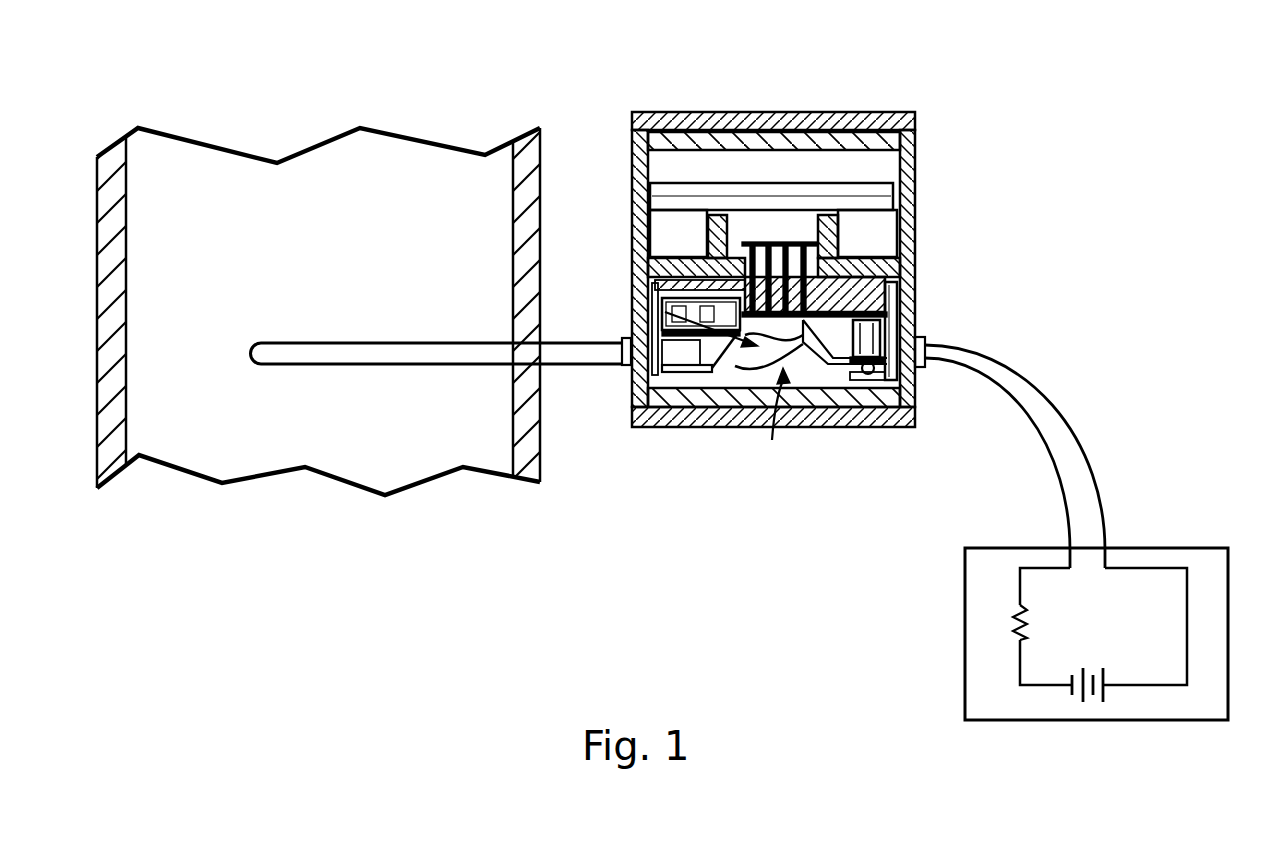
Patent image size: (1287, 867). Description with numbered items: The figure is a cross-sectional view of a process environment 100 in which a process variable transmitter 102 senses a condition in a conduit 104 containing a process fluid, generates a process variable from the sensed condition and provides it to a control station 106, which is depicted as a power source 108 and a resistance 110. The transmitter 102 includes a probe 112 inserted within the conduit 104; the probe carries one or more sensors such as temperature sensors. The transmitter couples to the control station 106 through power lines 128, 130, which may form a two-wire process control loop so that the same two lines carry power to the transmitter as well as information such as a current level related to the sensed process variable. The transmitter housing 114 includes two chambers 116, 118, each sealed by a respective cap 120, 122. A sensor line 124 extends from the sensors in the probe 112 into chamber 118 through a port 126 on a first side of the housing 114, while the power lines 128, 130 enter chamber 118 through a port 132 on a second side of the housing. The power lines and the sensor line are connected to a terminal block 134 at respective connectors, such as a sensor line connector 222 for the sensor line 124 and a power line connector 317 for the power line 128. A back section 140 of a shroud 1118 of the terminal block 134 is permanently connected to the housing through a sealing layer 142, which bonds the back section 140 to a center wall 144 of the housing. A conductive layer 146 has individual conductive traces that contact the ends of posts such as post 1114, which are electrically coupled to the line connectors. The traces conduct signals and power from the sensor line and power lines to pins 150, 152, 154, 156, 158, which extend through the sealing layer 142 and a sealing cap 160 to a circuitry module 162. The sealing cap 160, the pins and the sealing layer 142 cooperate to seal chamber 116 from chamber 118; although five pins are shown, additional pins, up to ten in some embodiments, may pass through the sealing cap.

The process environment 100 is at (603, 582).
The process variable transmitter 102 is at (1050, 164).
The conduit 104 is at (540, 430).
The control station 106 is at (965, 620).
The power source 108 is at (1093, 705).
The resistance 110 is at (1033, 618).
The probe 112 is at (430, 343).
The transmitter housing 114 is at (918, 145).
The chamber 116 is at (668, 157).
The chamber 118 is at (833, 380).
The cap 120 is at (745, 112).
The cap 122 is at (740, 420).
The sensor line 124 is at (806, 373).
The port 126 is at (625, 366).
The power line 128 is at (720, 368).
The power line 130 is at (705, 313).
The port 132 is at (925, 368).
The terminal block 134 is at (754, 434).
The back section 140 is at (900, 268).
The sealing layer 142 is at (650, 273).
The center wall 144 is at (897, 262).
The conductive layer 146 is at (868, 312).
The pin 150 is at (688, 234).
The pin 152 is at (757, 262).
The pin 154 is at (783, 262).
The pin 156 is at (803, 262).
The pin 158 is at (818, 258).
The sealing cap 160 is at (665, 200).
The circuitry module 162 is at (715, 210).
The sensor line connector 222 is at (868, 376).
The power line connector 317 is at (680, 372).
The post 1114 is at (903, 326).
The shroud 1118 is at (878, 340).